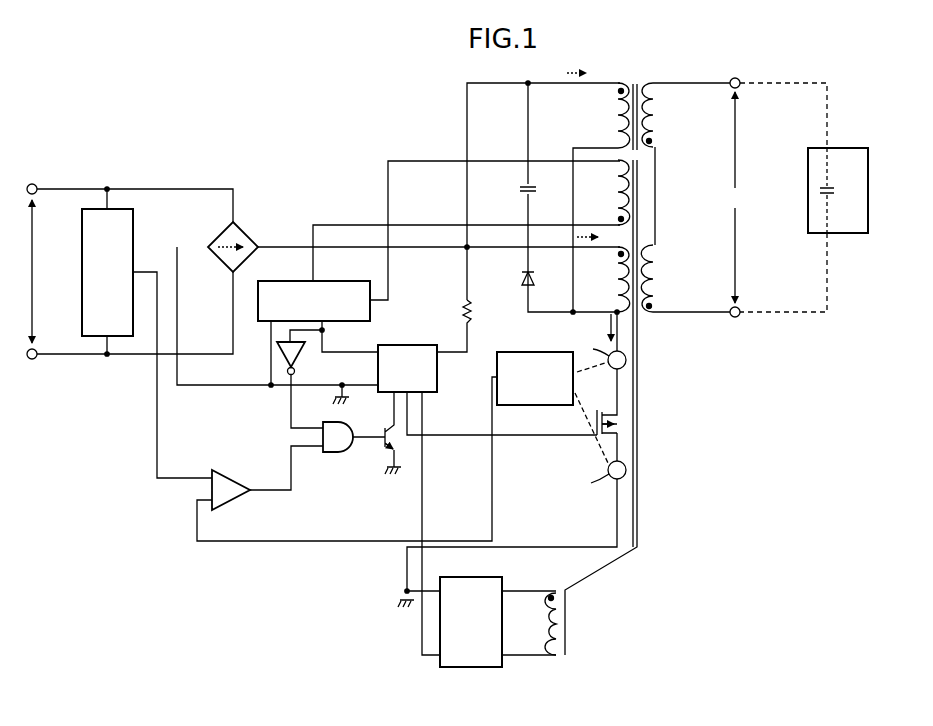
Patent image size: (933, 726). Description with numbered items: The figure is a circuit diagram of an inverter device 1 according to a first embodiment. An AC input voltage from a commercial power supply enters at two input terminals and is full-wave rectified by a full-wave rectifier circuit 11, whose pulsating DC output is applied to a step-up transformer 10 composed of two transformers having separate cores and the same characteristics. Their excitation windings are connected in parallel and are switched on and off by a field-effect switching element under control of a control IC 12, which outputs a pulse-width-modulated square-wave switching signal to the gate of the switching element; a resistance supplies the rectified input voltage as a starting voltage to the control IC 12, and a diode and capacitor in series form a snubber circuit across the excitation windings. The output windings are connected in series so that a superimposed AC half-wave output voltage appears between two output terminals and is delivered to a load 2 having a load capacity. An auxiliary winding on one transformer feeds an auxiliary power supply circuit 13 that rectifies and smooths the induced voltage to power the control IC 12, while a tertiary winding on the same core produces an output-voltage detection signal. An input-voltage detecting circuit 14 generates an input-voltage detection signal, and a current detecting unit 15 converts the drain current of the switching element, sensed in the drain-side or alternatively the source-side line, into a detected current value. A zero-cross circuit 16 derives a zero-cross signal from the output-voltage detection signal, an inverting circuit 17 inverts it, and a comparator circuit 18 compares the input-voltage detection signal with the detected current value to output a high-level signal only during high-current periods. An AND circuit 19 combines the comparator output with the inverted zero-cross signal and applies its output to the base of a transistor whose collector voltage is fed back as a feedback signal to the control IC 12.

The inverter device 1 is at (280, 168).
The load 2 is at (868, 187).
The step-up transformer 10 is at (670, 188).
The full-wave rectifier circuit 11 is at (245, 228).
The control IC 12 is at (437, 367).
The auxiliary power supply circuit 13 is at (470, 667).
The input-voltage detecting circuit 14 is at (133, 231).
The current detecting unit 15 is at (538, 352).
The zero-cross circuit 16 is at (323, 281).
The inverting circuit 17 is at (300, 353).
The comparator circuit 18 is at (233, 502).
The AND circuit 19 is at (337, 452).